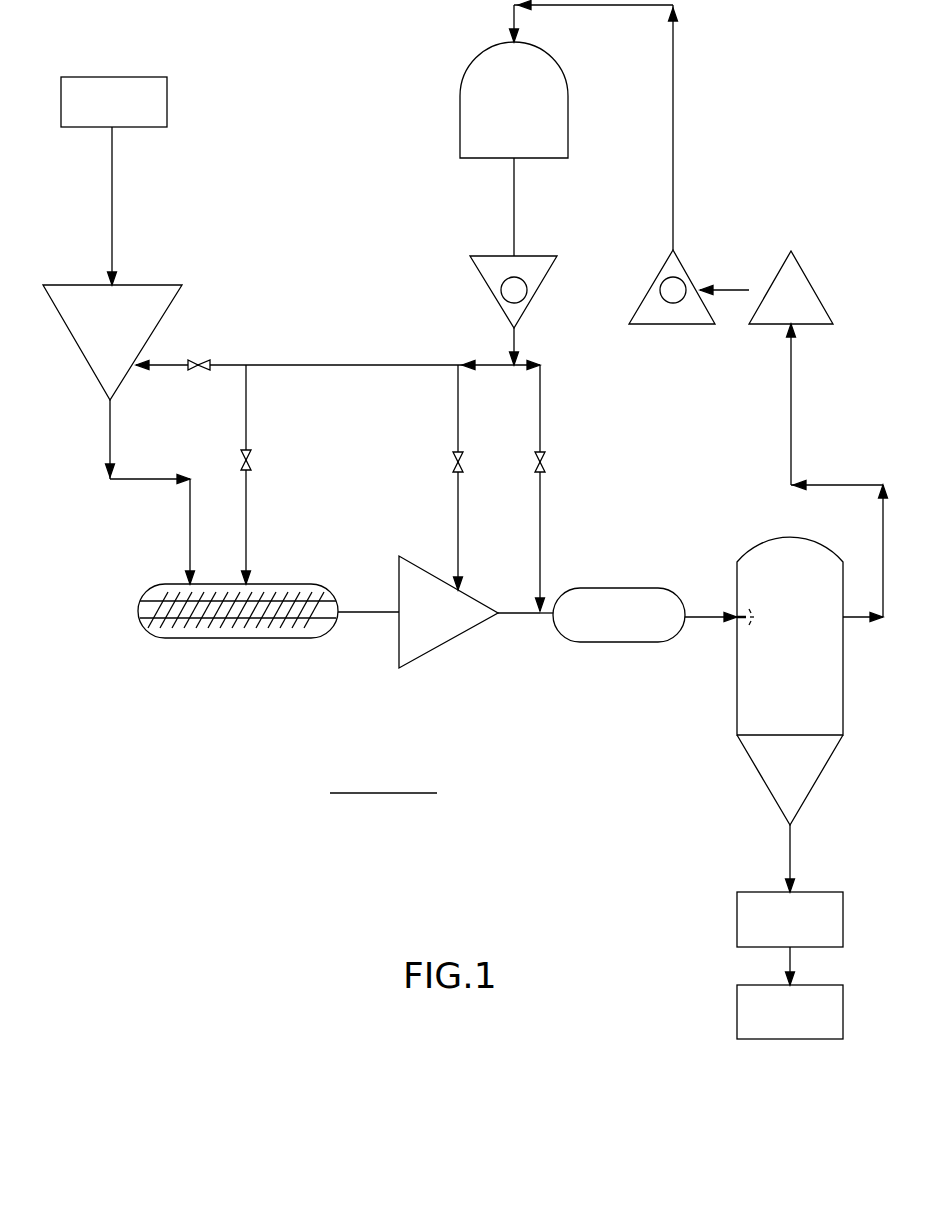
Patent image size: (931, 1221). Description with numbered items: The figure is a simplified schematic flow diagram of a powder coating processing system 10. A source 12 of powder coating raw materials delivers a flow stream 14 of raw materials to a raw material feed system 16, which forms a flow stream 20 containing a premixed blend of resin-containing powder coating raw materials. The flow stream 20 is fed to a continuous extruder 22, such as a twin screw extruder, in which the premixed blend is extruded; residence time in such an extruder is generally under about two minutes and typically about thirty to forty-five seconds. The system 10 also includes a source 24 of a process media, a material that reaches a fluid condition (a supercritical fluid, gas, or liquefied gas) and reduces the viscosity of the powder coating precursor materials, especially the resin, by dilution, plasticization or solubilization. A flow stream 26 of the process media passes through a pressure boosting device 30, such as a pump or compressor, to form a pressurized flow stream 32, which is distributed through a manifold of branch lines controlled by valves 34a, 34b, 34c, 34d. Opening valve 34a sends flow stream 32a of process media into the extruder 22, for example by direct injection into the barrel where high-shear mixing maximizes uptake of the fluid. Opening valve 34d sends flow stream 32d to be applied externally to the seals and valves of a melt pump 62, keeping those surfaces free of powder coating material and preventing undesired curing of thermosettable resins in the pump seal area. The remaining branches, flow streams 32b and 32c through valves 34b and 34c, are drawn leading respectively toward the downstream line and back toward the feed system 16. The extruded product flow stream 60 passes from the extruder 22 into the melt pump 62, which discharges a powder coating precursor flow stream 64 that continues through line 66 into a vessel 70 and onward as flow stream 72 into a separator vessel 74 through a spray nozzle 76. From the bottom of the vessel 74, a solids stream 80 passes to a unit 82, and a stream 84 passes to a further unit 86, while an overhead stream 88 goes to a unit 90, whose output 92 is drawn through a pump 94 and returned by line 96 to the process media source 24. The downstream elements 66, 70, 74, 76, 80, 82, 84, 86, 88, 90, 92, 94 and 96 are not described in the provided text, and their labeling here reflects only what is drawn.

The powder coating processing system 10 is at (383, 819).
The source of powder coating raw materials 12 is at (114, 102).
The flow stream of raw materials 14 is at (114, 167).
The raw material feed system 16 is at (112, 342).
The flow stream of premixed blend 20 is at (140, 492).
The continuous extruder 22 is at (238, 629).
The source of process media 24 is at (566, 80).
The flow stream of process media 26 is at (517, 193).
The pressure boosting device 30 is at (513, 292).
The process media flow stream 32 is at (517, 343).
The process media flow stream to extruder 32a is at (248, 543).
The process media flow stream b 32b is at (542, 545).
The process media flow stream c 32c is at (188, 376).
The process media flow stream to melt pump 32d is at (460, 545).
The valve 34a is at (240, 461).
The valve 34b is at (534, 463).
The valve 34c is at (216, 346).
The valve 34d is at (452, 463).
The extruded product flow stream 60 is at (368, 634).
The melt pump 62 is at (448, 612).
The powder coating precursor flow stream 64 is at (507, 636).
The inlet line 66 is at (559, 636).
The heater 70 is at (619, 615).
The flow stream 72 is at (696, 637).
The separator vessel 74 is at (802, 650).
The spray nozzle 76 is at (757, 595).
The solids outlet line 80 is at (793, 850).
The dryer 82 is at (802, 929).
The product line 84 is at (793, 961).
The product collector 86 is at (802, 1022).
The vapor line 88 is at (837, 473).
The condenser 90 is at (791, 287).
The condensate line 92 is at (724, 276).
The pump 94 is at (672, 288).
The solvent return line 96 is at (676, 195).